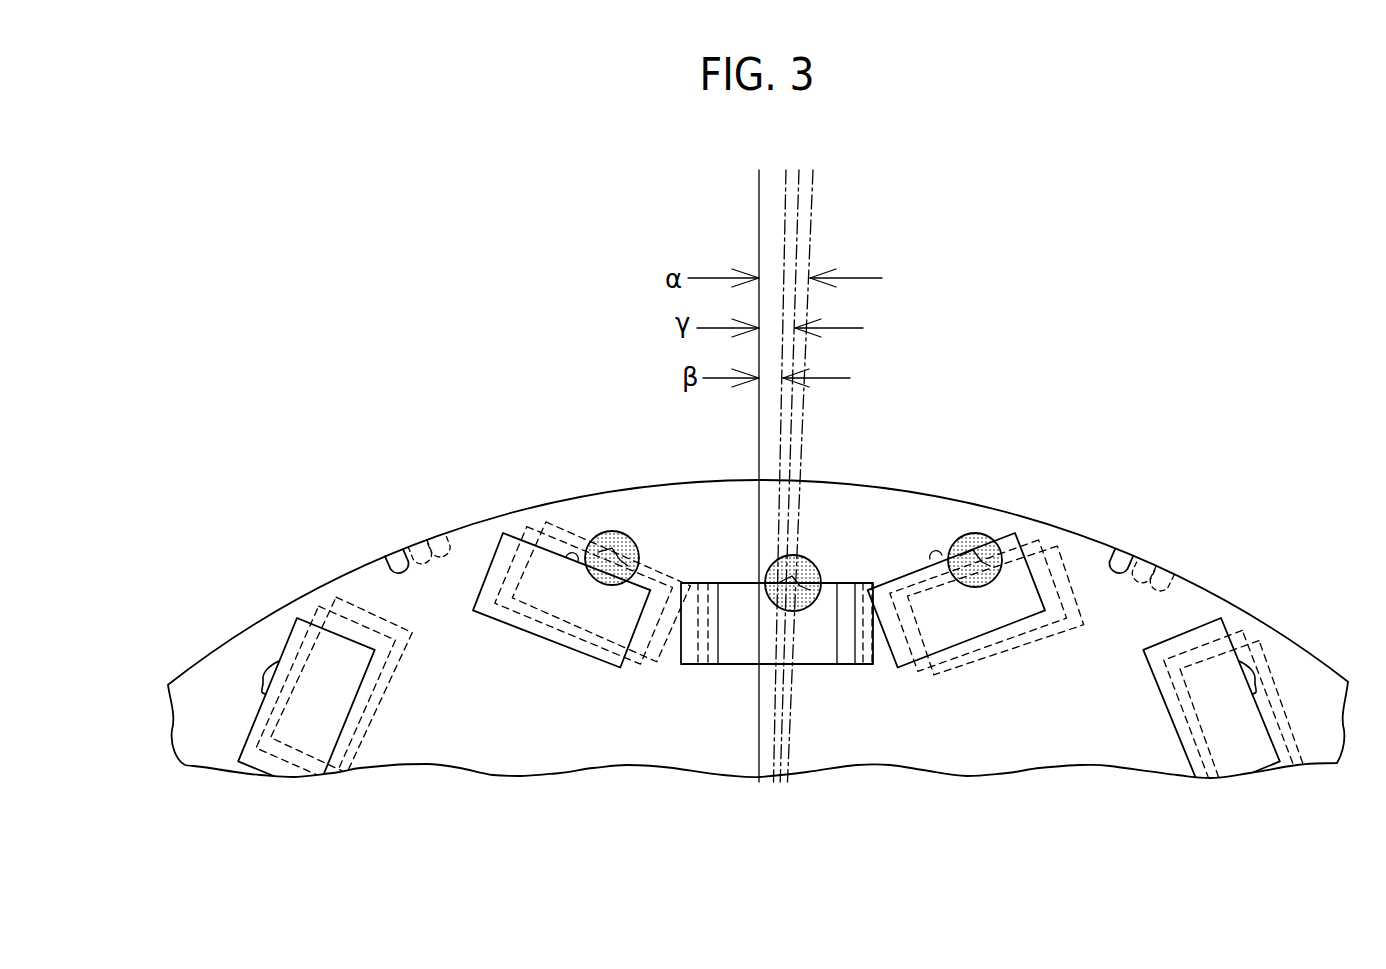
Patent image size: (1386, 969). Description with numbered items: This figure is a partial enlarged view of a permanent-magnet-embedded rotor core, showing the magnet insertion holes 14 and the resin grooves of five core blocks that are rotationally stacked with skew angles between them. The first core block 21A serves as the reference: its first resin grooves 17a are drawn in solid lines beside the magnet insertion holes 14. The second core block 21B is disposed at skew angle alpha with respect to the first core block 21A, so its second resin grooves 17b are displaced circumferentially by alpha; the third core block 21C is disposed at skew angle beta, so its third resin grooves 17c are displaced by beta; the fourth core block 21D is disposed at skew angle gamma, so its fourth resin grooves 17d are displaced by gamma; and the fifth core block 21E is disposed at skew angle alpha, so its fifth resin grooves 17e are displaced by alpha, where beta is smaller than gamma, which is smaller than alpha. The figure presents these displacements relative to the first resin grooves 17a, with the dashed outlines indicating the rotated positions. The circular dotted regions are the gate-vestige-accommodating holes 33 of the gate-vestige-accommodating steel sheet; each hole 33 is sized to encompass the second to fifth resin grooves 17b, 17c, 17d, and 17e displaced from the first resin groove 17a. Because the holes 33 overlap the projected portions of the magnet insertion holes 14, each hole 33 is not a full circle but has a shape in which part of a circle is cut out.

The magnet insertion hole 14 is at (521, 548).
The gate-vestige-accommodating hole 33 is at (612, 531).
The first core block 21A is at (283, 645).
The second core block 21B is at (363, 580).
The third core block 21C is at (262, 717).
The fourth core block 21D is at (313, 620).
The fifth core block 21E is at (800, 562).
The first resin groove 17a is at (570, 555).
The second resin groove 17b is at (615, 585).
The third resin groove 17c is at (583, 582).
The fourth resin groove 17d is at (593, 582).
The fifth resin groove 17e is at (799, 600).